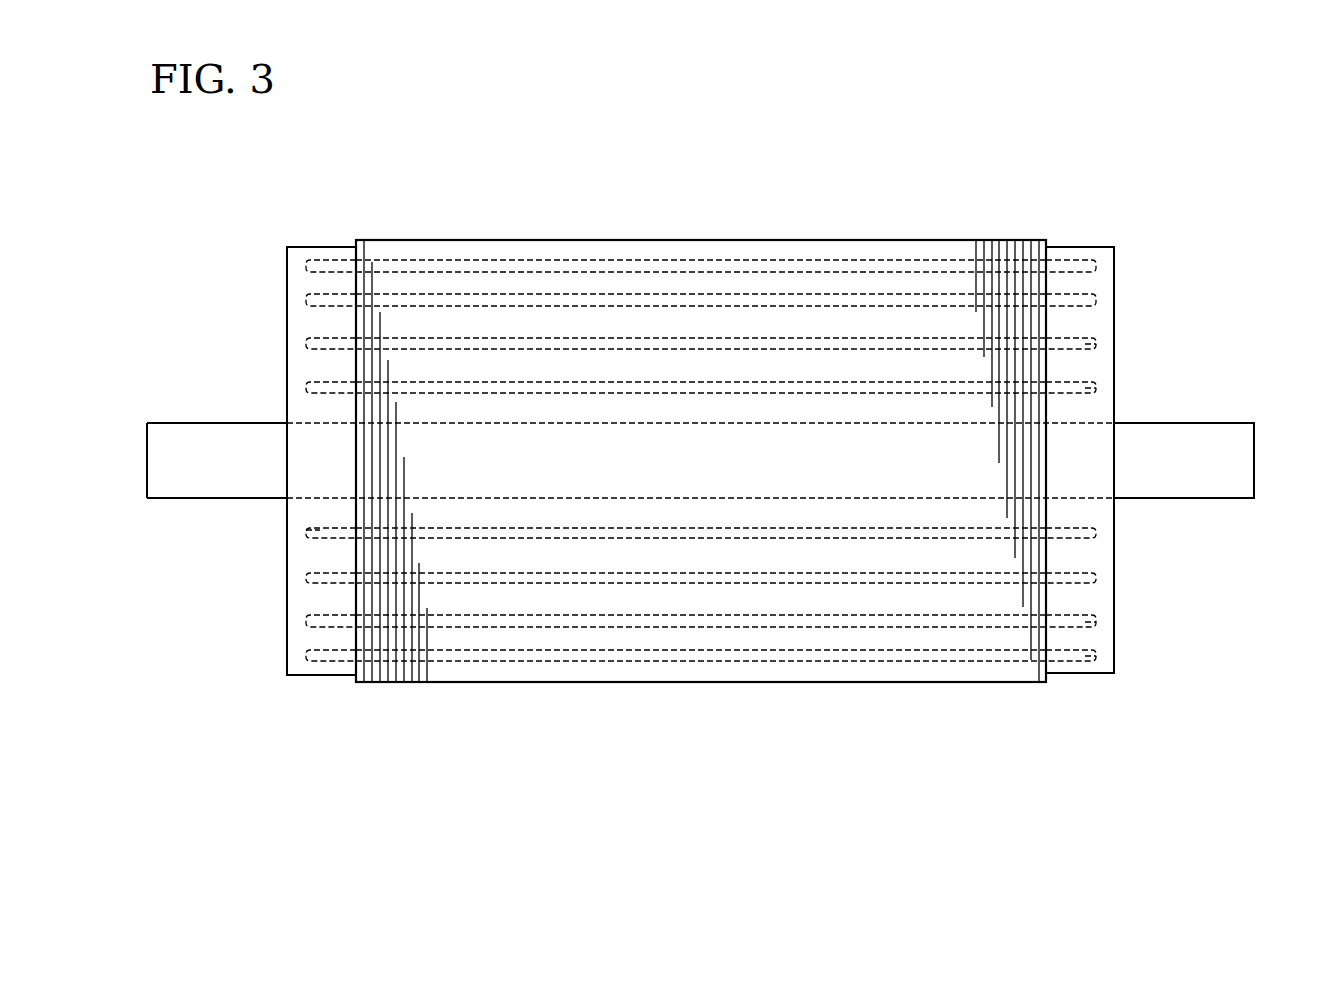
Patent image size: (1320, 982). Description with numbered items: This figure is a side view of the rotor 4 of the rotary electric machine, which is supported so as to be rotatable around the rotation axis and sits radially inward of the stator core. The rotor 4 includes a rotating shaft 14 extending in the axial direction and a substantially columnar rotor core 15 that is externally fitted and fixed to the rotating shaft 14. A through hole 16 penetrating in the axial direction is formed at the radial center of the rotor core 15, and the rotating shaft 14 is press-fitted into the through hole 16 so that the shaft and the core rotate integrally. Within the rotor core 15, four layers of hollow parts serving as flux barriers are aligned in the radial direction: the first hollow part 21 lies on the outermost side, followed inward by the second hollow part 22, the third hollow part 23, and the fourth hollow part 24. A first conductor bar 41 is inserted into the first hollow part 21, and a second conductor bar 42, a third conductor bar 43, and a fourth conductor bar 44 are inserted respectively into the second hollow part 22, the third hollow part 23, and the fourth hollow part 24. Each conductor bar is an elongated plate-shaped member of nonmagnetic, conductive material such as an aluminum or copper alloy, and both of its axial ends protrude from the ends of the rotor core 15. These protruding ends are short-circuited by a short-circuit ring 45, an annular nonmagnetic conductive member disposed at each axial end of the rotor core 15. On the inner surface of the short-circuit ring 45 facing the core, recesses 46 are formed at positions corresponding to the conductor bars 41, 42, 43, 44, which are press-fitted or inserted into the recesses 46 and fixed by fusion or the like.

The rotor 4 is at (842, 214).
The rotating shaft 14 is at (1196, 423).
The rotor core 15 is at (724, 240).
The through hole 16 is at (318, 424).
The first hollow part 21 is at (672, 260).
The second hollow part 22 is at (678, 298).
The third hollow part 23 is at (748, 345).
The fourth hollow part 24 is at (817, 387).
The first conductor bar 41 is at (1085, 258).
The second conductor bar 42 is at (1078, 293).
The third conductor bar 43 is at (306, 340).
The fourth conductor bar 44 is at (306, 384).
The short-circuit ring 45 is at (287, 272).
The recesses 46 is at (1093, 388).